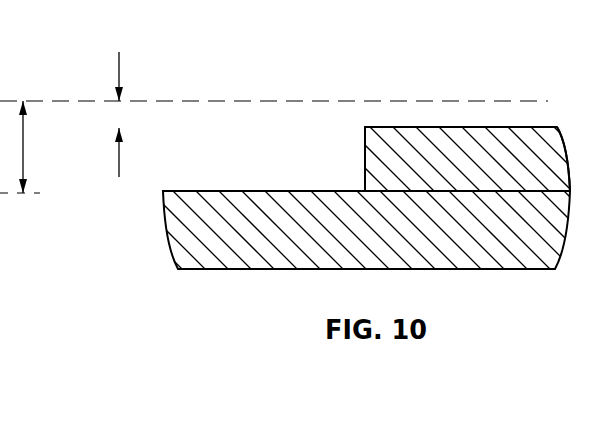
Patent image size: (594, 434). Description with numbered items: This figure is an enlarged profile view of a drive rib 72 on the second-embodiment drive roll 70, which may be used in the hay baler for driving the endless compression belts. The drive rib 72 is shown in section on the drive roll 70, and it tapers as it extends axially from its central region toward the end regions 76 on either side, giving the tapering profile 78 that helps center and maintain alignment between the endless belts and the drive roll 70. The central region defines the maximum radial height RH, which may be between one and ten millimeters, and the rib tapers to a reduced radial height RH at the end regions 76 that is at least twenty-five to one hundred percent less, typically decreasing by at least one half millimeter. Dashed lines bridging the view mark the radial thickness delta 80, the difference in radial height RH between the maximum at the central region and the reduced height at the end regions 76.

The drive roll 70 is at (497, 263).
The drive ribs 72 is at (416, 140).
The end regions 76 is at (503, 140).
The tapering profile 78 is at (537, 115).
The radial thickness delta 80 is at (119, 67).
The radial height RH is at (23, 148).